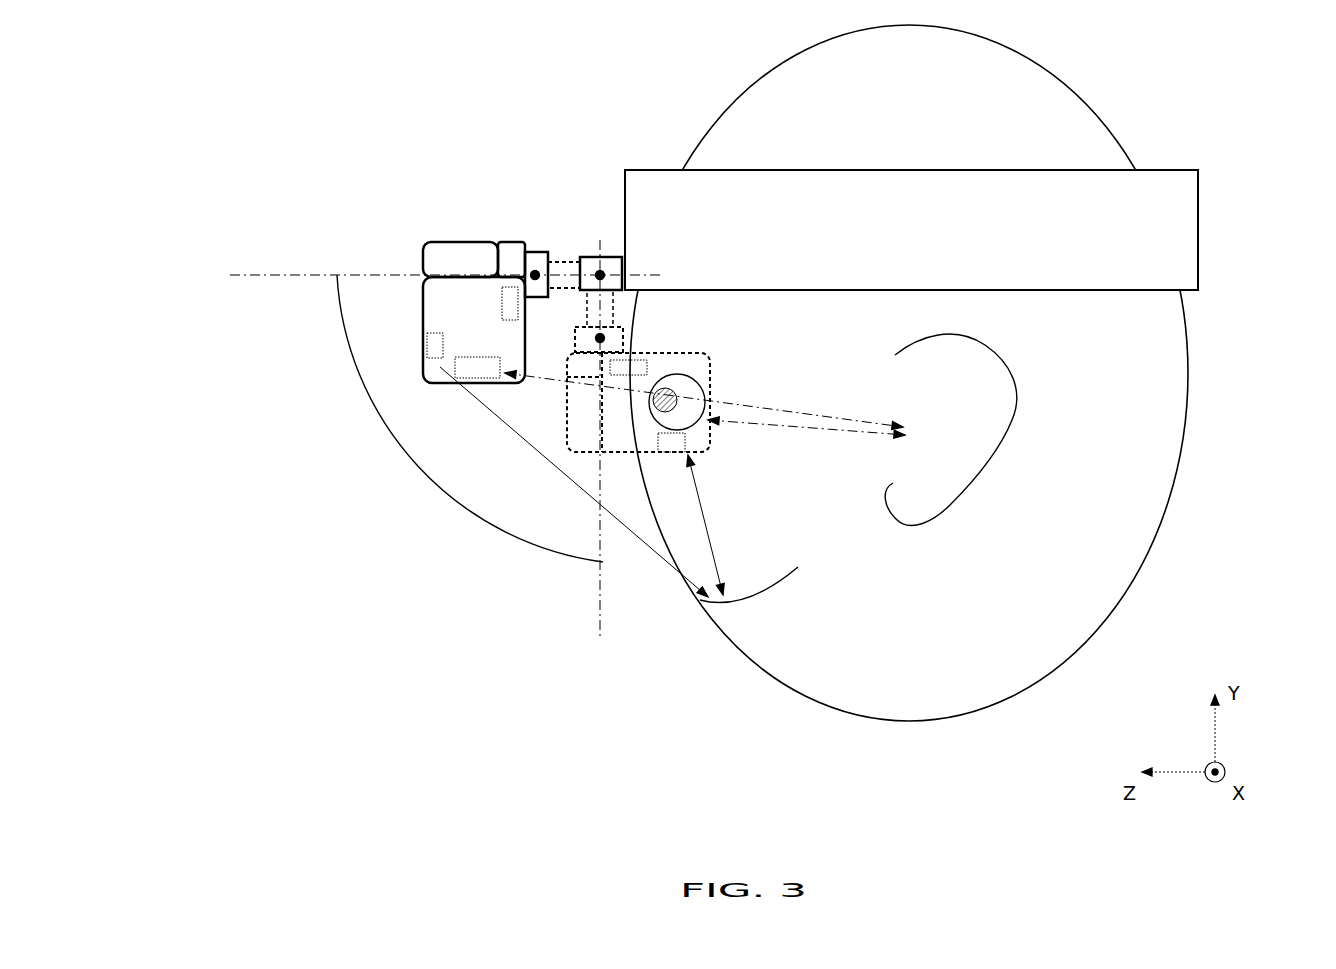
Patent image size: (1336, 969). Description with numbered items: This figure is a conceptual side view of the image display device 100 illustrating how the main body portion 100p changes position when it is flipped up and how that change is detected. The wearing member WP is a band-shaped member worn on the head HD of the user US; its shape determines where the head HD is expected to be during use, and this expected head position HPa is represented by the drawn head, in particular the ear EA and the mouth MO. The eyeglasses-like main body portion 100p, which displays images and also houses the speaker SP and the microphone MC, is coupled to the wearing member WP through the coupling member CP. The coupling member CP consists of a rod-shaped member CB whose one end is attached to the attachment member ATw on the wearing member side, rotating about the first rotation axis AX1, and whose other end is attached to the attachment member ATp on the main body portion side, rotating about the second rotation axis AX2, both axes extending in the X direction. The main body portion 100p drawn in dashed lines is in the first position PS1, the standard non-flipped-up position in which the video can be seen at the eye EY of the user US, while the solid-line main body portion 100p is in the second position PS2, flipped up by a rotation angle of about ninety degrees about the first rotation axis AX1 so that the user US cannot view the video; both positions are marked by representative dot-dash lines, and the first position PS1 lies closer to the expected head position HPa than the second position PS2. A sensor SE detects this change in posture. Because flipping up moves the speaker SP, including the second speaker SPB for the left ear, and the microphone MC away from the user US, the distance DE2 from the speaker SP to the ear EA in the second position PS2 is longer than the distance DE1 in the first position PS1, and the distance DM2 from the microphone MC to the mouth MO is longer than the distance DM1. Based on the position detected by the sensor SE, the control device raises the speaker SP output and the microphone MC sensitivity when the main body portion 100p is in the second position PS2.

The image display device 100 is at (480, 152).
The main body portion 100p is at (407, 242).
The coupling member CP is at (550, 198).
The wearing member WP is at (647, 185).
The attachment member on the wearing member side ATw is at (612, 258).
The attachment member on the main body portion side ATp is at (537, 257).
The first rotation axis AX1 is at (600, 258).
The second rotation axis AX2 is at (533, 258).
The rod-shaped member CB is at (560, 262).
The sensor SE is at (520, 305).
The eye EY is at (676, 386).
The speaker SP is at (477, 373).
The second speaker SPB is at (702, 390).
The microphone MC is at (440, 367).
The distance from the speaker to the ears in the first position DE1 is at (806, 434).
The distance from the speaker to the ears in the second position DE2 is at (856, 412).
The distance from the microphone to the mouth in the first position DM1 is at (717, 525).
The distance from the microphone to the mouth in the second position DM2 is at (574, 482).
The mouth MO is at (742, 597).
The ears EA is at (978, 465).
The user US is at (961, 373).
The head HD is at (909, 373).
The expected head position HPa is at (1123, 564).
The first position PS1 is at (600, 640).
The second position PS2 is at (232, 275).